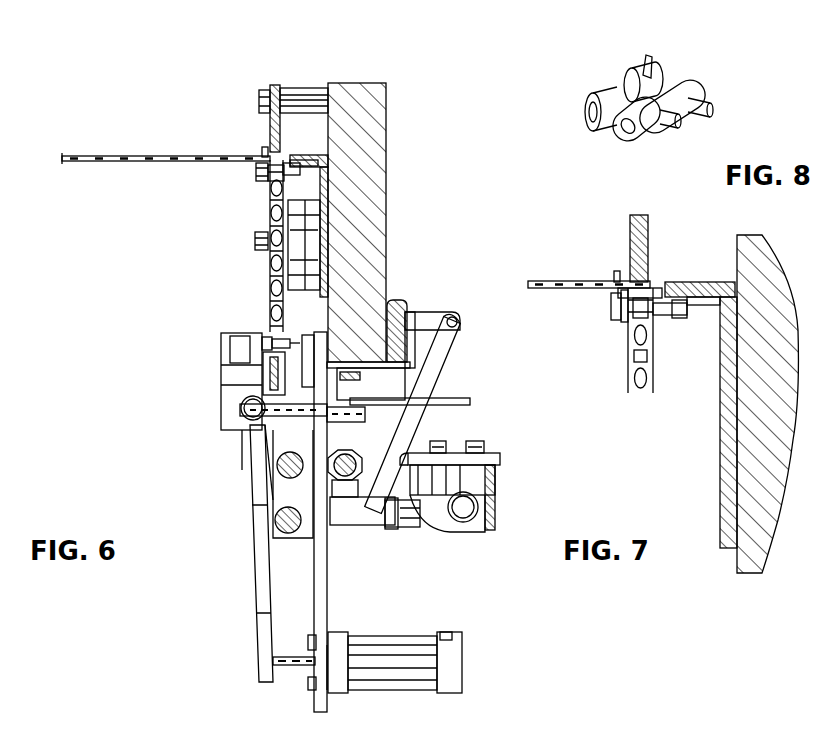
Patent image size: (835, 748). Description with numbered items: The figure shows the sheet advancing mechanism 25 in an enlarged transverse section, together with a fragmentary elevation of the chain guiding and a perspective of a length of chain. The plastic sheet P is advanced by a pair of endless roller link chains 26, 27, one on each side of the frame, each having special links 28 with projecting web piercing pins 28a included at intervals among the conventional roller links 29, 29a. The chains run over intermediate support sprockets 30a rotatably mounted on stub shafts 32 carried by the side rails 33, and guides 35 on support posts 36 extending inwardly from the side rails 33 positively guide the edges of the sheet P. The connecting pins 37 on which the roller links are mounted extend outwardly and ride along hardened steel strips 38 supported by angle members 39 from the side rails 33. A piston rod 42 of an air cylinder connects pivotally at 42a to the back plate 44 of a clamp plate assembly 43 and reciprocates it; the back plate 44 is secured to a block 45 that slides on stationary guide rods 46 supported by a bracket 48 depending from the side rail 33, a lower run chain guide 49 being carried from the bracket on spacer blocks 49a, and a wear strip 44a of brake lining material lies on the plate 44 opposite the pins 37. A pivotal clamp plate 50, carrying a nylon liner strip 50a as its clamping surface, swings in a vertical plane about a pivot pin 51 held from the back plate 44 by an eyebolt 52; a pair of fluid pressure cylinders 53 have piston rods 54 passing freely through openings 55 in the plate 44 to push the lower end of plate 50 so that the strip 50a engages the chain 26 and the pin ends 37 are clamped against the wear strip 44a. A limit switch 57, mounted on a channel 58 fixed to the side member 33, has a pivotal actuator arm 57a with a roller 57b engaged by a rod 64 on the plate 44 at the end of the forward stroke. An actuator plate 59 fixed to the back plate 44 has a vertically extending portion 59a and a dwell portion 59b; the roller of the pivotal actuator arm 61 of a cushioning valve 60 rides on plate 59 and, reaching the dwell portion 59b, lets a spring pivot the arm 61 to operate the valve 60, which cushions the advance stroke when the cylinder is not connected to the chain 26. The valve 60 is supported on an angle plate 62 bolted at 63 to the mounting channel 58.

In FIG. 6, the sheet advancing mechanism 25 is at (392, 250).
In FIG. 6, the endless roller link chain 26 is at (268, 188).
In FIG. 7, the endless roller link chain 26 is at (640, 340).
In FIG. 7, the endless roller link chain 27 is at (622, 330).
In FIG. 8, the endless roller link chain 27 is at (700, 82).
In FIG. 6, the special link 28 is at (262, 172).
In FIG. 7, the special link 28 is at (611, 320).
In FIG. 6, the plastic web piercing pin 28a is at (263, 150).
In FIG. 7, the plastic web piercing pin 28a is at (618, 272).
In FIG. 8, the plastic web piercing pin 28a is at (650, 58).
In FIG. 6, the roller link 29 is at (268, 178).
In FIG. 7, the roller link 29 is at (630, 332).
In FIG. 8, the roller link 29 is at (628, 146).
In FIG. 7, the roller link 29a is at (654, 292).
In FIG. 8, the roller link 29a is at (663, 133).
In FIG. 6, the intermediate support sprocket 30a is at (282, 283).
In FIG. 7, the intermediate support sprocket 30a is at (632, 380).
In FIG. 6, the stub shaft 32 is at (318, 232).
In FIG. 6, the side rail 33 is at (387, 92).
In FIG. 7, the side rail 33 is at (758, 262).
In FIG. 6, the guide 35 is at (274, 87).
In FIG. 7, the guide 35 is at (646, 232).
In FIG. 6, the support post 36 is at (312, 91).
In FIG. 6, the connecting pin 37 is at (297, 176).
In FIG. 7, the connecting pin 37 is at (675, 314).
In FIG. 8, the connecting pin 37 is at (712, 108).
In FIG. 6, the hardened steel strip 38 is at (299, 158).
In FIG. 7, the hardened steel strip 38 is at (690, 305).
In FIG. 6, the angle member 39 is at (314, 158).
In FIG. 7, the angle member 39 is at (698, 283).
In FIG. 6, the piston rod 42 is at (412, 455).
In FIG. 6, the pivotal connection 42a is at (440, 483).
In FIG. 6, the clamp plate assembly 43 is at (328, 616).
In FIG. 6, the back plate 44 is at (328, 579).
In FIG. 6, the wear strip 44a is at (306, 336).
In FIG. 6, the block 45 is at (280, 503).
In FIG. 6, the guide rod 46 is at (282, 470).
In FIG. 6, the bracket 48 is at (374, 366).
In FIG. 6, the lower run chain guide 49 is at (262, 378).
In FIG. 6, the spacer block 49a is at (250, 440).
In FIG. 6, the clamp plate 50 is at (262, 672).
In FIG. 6, the nylon liner strip 50a is at (262, 342).
In FIG. 6, the pivot pin 51 is at (262, 430).
In FIG. 6, the eyebolt 52 is at (262, 500).
In FIG. 6, the fluid pressure operated cylinder 53 is at (460, 668).
In FIG. 6, the piston rod 54 is at (285, 668).
In FIG. 6, the opening 55 is at (329, 700).
In FIG. 6, the limit switch 57 is at (460, 318).
In FIG. 6, the pivotal actuator arm 57a is at (400, 402).
In FIG. 6, the roller 57b is at (355, 418).
In FIG. 6, the mounting channel 58 is at (398, 302).
In FIG. 6, the actuator plate 59 is at (335, 517).
In FIG. 6, the vertically extending portion 59a is at (432, 383).
In FIG. 6, the dwell portion 59b is at (352, 507).
In FIG. 6, the cushioning valve 60 is at (480, 505).
In FIG. 6, the actuator arm 61 is at (418, 524).
In FIG. 6, the angle plate 62 is at (420, 312).
In FIG. 6, the bolt 63 is at (455, 318).
In FIG. 6, the rod 64 is at (470, 436).
In FIG. 6, the plastic sheet P is at (108, 155).
In FIG. 7, the plastic sheet P is at (537, 280).